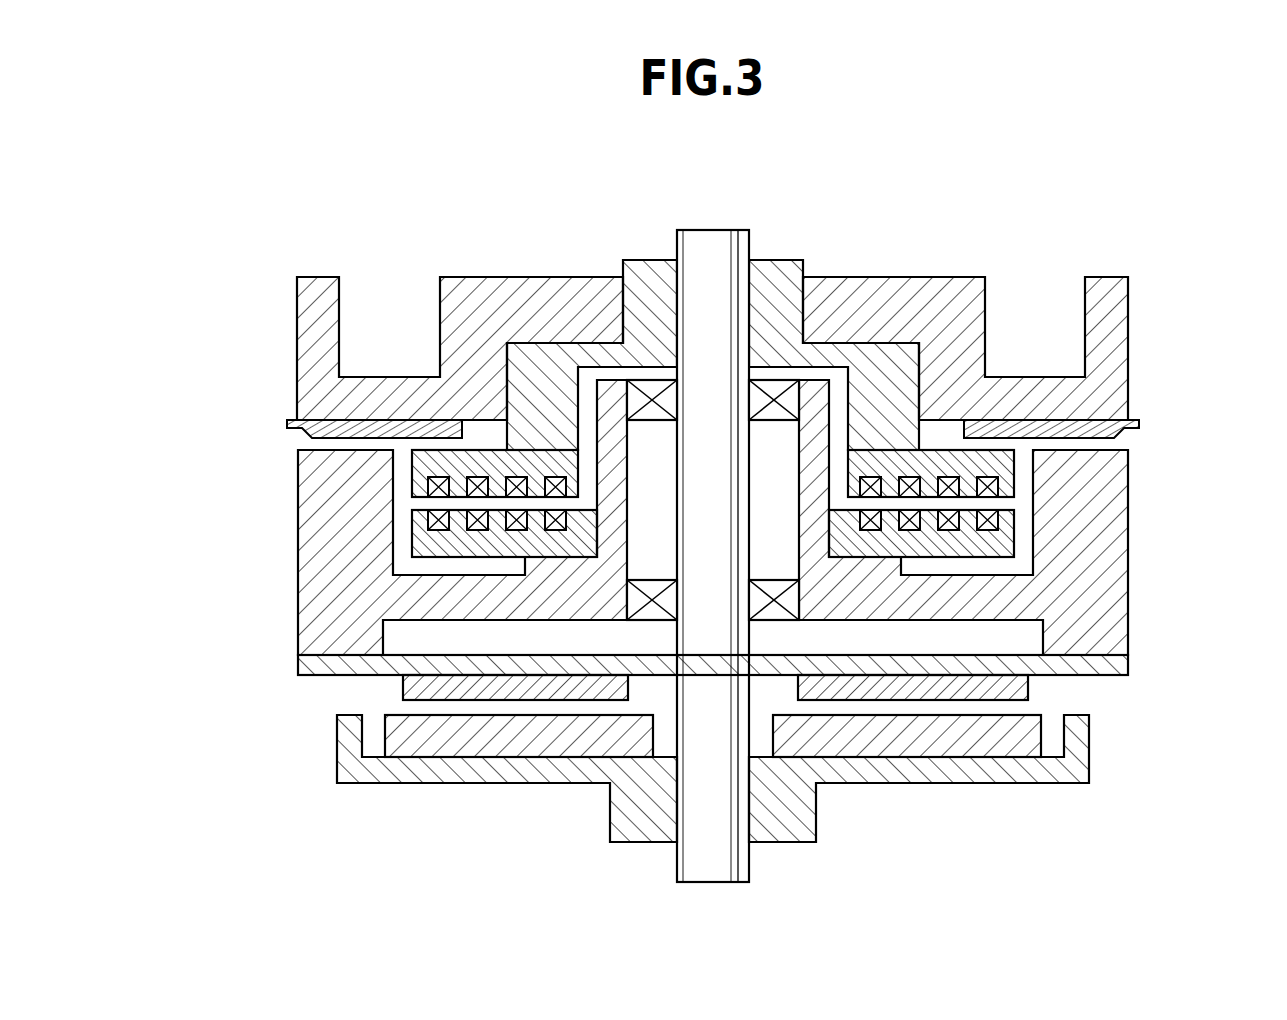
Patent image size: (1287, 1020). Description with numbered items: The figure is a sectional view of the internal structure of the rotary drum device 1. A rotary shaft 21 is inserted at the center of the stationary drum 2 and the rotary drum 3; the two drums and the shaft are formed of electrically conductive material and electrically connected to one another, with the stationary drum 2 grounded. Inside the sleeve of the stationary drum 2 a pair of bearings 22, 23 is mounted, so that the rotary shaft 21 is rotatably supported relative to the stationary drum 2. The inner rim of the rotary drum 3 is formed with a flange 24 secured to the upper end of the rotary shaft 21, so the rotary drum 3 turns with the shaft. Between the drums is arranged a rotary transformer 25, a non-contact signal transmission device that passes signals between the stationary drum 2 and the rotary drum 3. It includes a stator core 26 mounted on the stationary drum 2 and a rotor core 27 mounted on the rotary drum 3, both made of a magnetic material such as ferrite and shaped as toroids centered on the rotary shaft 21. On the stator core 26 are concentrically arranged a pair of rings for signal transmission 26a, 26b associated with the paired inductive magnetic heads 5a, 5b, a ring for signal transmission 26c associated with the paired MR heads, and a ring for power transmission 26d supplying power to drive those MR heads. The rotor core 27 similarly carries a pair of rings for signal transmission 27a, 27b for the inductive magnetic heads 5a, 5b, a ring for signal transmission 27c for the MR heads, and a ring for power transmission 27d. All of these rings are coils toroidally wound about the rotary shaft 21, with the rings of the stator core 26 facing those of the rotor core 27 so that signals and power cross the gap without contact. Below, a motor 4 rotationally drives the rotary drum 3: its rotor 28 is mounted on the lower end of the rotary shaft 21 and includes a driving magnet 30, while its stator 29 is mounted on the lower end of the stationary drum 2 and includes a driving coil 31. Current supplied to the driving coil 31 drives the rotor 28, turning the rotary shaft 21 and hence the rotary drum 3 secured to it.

The rotary drum device 1 is at (1132, 238).
The stationary drum 2 is at (1110, 608).
The rotary drum 3 is at (1118, 330).
The motor 4 is at (497, 803).
The inductive magnetic head 5a is at (1128, 424).
The inductive magnetic head 5b is at (290, 424).
The rotary shaft 21 is at (721, 247).
The bearing 22 is at (775, 392).
The bearing 23 is at (655, 588).
The flange 24 is at (776, 272).
The rotary transformer 25 is at (842, 534).
The stator core 26 is at (806, 678).
The ring for signal transmission 26a is at (870, 531).
The ring for signal transmission 26b is at (910, 531).
The ring for signal transmission 26c is at (949, 531).
The ring for power transmission 26d is at (988, 531).
The rotor core 27 is at (806, 359).
The ring for signal transmission 27a is at (870, 478).
The ring for signal transmission 27b is at (910, 478).
The ring for signal transmission 27c is at (949, 478).
The ring for power transmission 27d is at (988, 478).
The rotor 28 is at (645, 833).
The stator 29 is at (300, 665).
The driving magnet 30 is at (412, 748).
The driving coil 31 is at (400, 689).